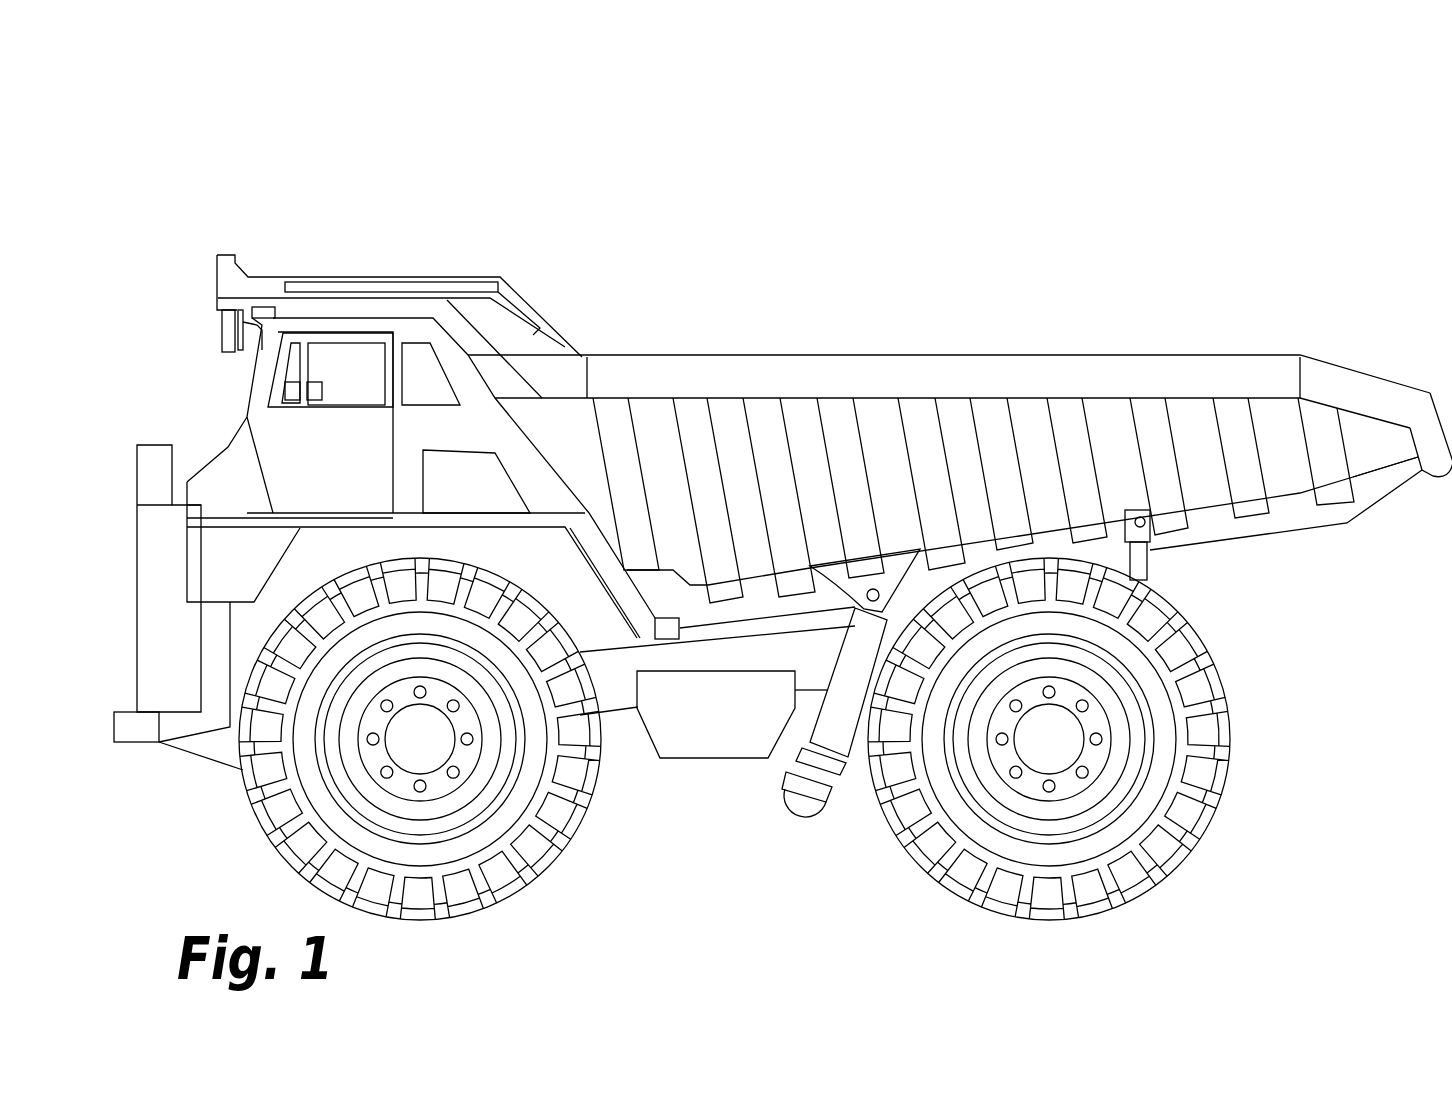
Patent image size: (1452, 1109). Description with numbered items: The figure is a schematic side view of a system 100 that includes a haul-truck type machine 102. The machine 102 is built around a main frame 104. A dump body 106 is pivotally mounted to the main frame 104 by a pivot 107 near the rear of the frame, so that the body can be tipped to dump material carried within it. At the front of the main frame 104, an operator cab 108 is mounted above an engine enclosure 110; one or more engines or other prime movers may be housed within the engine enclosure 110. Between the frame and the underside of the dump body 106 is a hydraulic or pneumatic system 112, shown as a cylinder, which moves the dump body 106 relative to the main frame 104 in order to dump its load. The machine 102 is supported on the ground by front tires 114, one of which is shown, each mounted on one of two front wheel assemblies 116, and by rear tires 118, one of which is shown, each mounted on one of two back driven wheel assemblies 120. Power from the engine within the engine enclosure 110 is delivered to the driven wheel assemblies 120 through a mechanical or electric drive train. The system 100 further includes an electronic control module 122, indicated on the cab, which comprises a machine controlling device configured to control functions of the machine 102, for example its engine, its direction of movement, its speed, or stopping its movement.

The system 100 is at (230, 128).
The machine 102 is at (535, 266).
The main frame 104 is at (622, 683).
The dump body 106 is at (748, 375).
The pivot 107 is at (1142, 527).
The operator cab 108 is at (428, 427).
The engine enclosure 110 is at (325, 558).
The hydraulic or pneumatic system 112 is at (833, 723).
The front tires 114 is at (438, 855).
The front wheel assemblies 116 is at (465, 790).
The rear tires 118 is at (1152, 802).
The back (driven) wheel assemblies 120 is at (1120, 740).
The electronic control module 122 is at (470, 483).